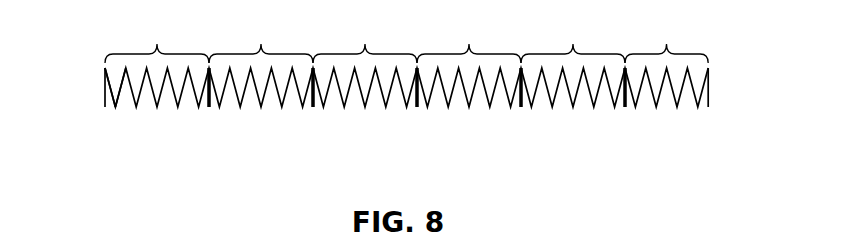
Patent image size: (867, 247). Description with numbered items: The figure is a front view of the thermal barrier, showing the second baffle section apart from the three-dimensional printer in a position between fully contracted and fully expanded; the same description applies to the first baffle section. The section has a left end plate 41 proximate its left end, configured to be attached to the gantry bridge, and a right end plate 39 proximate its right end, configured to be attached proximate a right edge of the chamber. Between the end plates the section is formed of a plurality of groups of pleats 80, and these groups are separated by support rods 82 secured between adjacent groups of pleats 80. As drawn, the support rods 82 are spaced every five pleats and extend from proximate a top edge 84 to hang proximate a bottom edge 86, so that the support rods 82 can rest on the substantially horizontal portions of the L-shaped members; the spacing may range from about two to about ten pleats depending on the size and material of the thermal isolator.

The right end plate 39 is at (710, 88).
The left end plate 41 is at (105, 98).
The groups of pleats 80 is at (406, 38).
The support rods 82 is at (605, 143).
The top edge 84 is at (105, 70).
The bottom edge 86 is at (105, 104).